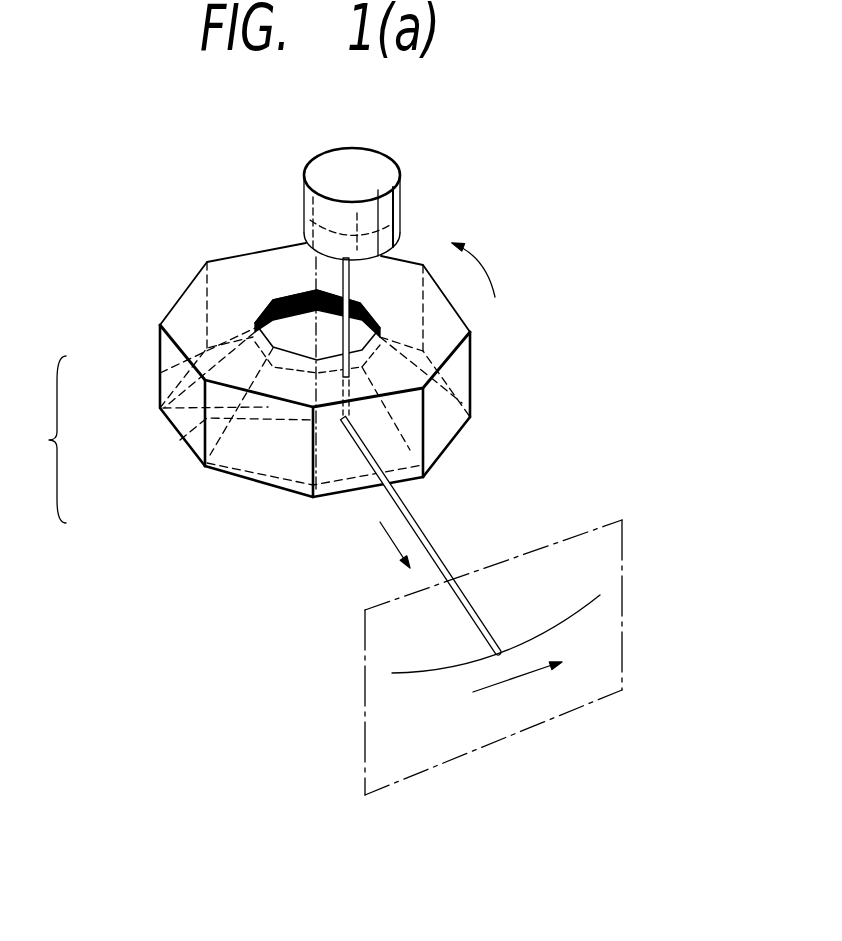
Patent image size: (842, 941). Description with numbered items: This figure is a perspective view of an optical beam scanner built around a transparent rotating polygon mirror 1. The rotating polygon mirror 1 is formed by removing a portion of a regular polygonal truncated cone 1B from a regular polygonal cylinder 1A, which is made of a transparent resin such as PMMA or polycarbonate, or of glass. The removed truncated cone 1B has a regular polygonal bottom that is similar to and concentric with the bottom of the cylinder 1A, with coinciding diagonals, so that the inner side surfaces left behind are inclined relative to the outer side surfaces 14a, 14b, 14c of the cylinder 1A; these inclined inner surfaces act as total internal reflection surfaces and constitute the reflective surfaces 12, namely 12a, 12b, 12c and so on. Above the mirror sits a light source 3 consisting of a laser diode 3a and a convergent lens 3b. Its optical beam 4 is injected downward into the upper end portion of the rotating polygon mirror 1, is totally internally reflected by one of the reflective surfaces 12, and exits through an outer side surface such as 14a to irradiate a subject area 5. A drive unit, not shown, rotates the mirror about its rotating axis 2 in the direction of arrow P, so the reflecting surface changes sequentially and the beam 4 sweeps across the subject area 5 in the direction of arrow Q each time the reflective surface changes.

The rotating polygon mirror 1 is at (407, 267).
The regular polygonal cylinder 1A is at (455, 327).
The regular polygonal truncated cone 1B is at (438, 403).
The rotating axis 2 is at (313, 330).
The light source 3 is at (371, 156).
The laser diode 3a is at (400, 198).
The convergent lens 3b is at (387, 230).
The optical beam 4 is at (420, 523).
The subject area 5 is at (623, 670).
The reflective surfaces 12 is at (44, 439).
The reflective surface 12a is at (180, 440).
The reflective surface 12b is at (163, 408).
The reflective surface 12c is at (160, 373).
The outer side surface 14a is at (340, 472).
The outer side surface 14b is at (258, 462).
The outer side surface 14c is at (193, 440).